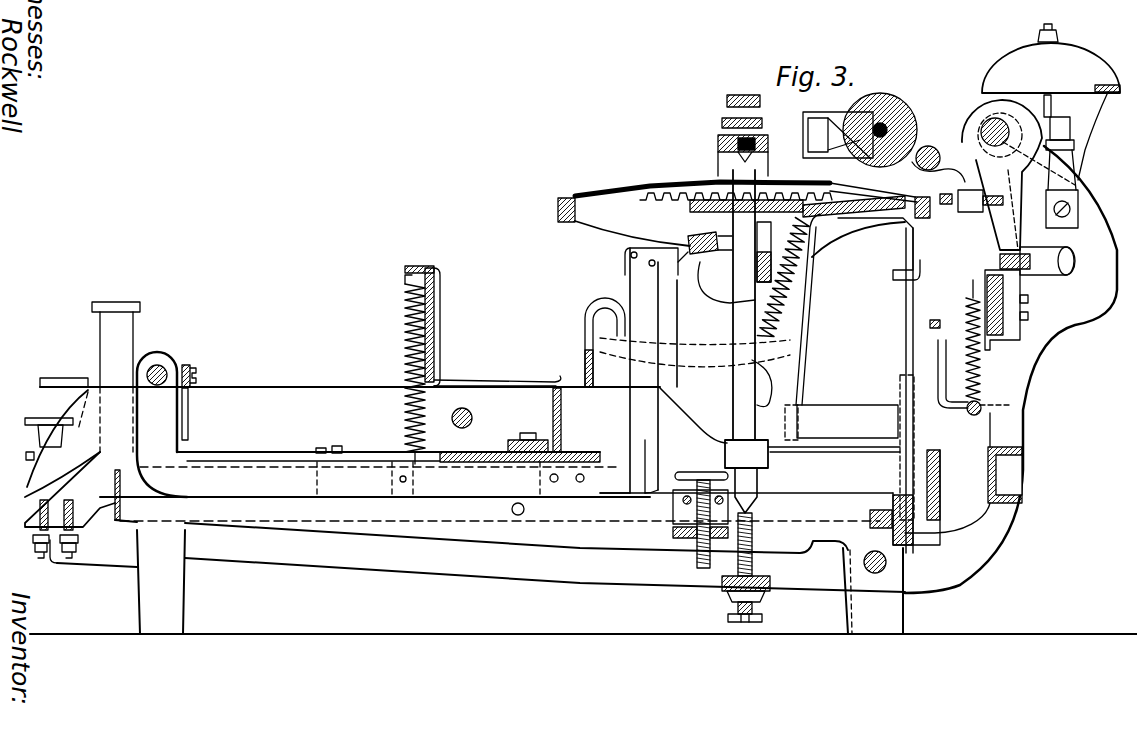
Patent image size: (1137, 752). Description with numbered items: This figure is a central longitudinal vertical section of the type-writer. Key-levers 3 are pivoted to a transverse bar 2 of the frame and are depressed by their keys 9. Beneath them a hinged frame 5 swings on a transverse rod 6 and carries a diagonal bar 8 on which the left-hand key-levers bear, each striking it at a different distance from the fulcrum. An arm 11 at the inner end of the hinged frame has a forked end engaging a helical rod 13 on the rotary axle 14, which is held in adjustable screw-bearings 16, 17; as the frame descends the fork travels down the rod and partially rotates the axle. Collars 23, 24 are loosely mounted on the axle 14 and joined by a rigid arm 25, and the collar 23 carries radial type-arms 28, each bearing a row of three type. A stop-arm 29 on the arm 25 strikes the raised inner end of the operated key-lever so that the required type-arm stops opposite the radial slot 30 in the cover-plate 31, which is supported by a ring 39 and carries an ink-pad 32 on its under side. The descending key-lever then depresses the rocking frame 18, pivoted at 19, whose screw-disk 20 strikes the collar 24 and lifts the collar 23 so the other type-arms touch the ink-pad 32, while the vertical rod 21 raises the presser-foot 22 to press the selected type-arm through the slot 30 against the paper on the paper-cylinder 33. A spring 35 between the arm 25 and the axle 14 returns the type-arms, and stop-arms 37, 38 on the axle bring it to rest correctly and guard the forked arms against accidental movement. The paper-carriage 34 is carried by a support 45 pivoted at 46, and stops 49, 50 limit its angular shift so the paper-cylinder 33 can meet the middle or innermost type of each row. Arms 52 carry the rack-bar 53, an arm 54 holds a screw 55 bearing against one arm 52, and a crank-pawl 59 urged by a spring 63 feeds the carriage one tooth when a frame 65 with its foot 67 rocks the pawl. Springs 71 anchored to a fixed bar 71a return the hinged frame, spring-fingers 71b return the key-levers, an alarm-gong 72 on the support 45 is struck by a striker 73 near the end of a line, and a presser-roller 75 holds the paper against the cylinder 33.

The transverse bar 2 is at (466, 410).
The key-levers 3 is at (350, 442).
The hinged frame 5 is at (322, 448).
The transverse rod 6 is at (162, 370).
The diagonal bar 8 is at (340, 446).
The keys 9 is at (62, 378).
The arm 11 is at (630, 278).
The helical rod 13 is at (755, 370).
The rotary axle 14 is at (746, 452).
The adjustable screw-bearing 16 is at (752, 560).
The adjustable screw-bearing 17 is at (752, 132).
The rocking frame 18 is at (465, 516).
The pivot 19 is at (512, 508).
The adjustable screw-disk 20 is at (688, 472).
The vertical rod 21 is at (915, 545).
The presser-foot 22 is at (848, 240).
The collar 23 is at (733, 230).
The collar 24 is at (746, 454).
The rigid arm 25 is at (805, 345).
The radial type-arms 28 is at (778, 205).
The stop-arm 29 is at (834, 428).
The radial slot 30 is at (898, 280).
The cover-plate 31 is at (585, 195).
The ink-pad 32 is at (598, 215).
The paper-cylinder 33 is at (878, 110).
The paper-carriage 34 is at (1006, 175).
The spring 35 is at (925, 150).
The stop-arm 37 is at (695, 234).
The stop-arm 38 is at (722, 285).
The ring 39 is at (548, 208).
The support 45 is at (1010, 522).
The pivot 46 is at (885, 566).
The stop 49 is at (40, 556).
The stop 50 is at (78, 548).
The arms 52 is at (1007, 210).
The rack-bar 53 is at (1010, 254).
The arm 54 is at (961, 192).
The screw 55 is at (985, 192).
The crank-pawl 59 is at (985, 280).
The spring 63 is at (985, 380).
The frame 65 is at (600, 310).
The foot 67 is at (975, 389).
The springs 71 is at (403, 300).
The fixed bar 71a is at (430, 266).
The spring-fingers 71b is at (515, 382).
The alarm-gong 72 is at (1051, 126).
The striker 73 is at (1120, 86).
The presser-roller 75 is at (940, 150).